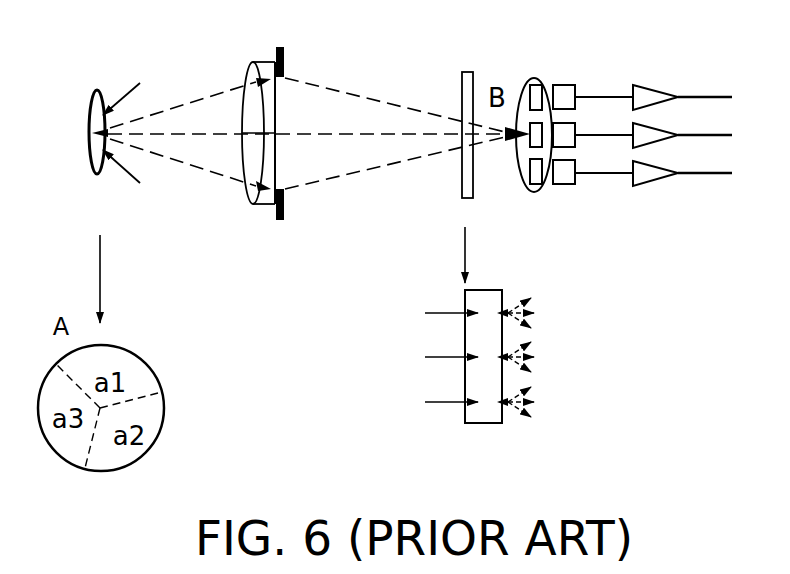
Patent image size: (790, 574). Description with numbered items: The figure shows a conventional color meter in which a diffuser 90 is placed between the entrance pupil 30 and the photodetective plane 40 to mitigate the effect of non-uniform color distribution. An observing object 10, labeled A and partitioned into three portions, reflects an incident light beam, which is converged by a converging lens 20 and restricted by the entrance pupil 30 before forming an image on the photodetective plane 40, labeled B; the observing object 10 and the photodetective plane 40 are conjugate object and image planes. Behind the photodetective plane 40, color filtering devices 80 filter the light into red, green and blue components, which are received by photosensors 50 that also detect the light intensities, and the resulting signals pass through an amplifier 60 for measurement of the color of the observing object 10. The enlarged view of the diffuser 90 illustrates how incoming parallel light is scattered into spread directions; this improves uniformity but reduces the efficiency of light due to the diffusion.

The observing object 10 is at (95, 167).
The converging lens 20 is at (252, 186).
The entrance pupil 30 is at (284, 213).
The photodetective plane 40 is at (524, 152).
The photosensors 50 is at (577, 100).
The amplifier 60 is at (657, 168).
The color filtering devices 80 is at (537, 165).
The diffusion plate 90 is at (456, 182).